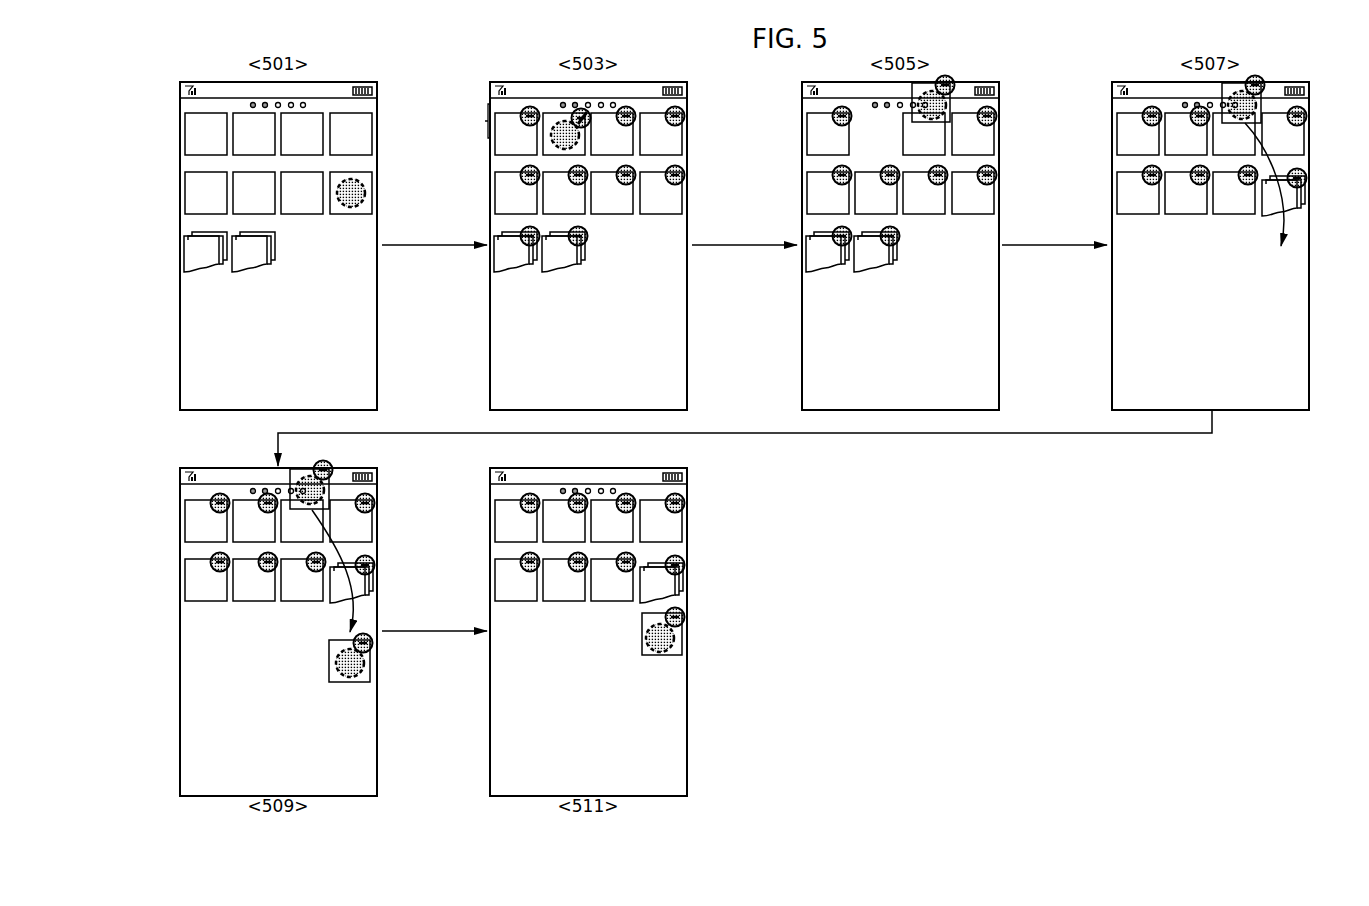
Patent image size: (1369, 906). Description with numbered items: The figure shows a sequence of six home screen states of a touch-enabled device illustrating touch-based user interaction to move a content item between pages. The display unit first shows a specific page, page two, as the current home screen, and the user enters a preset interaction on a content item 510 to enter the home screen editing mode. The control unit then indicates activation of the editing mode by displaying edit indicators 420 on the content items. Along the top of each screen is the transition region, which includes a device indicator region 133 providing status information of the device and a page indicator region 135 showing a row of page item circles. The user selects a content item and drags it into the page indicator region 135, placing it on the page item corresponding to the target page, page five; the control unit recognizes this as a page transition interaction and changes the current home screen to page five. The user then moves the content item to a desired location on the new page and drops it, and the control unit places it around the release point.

The content item 510 is at (365, 193).
The page indicator region 135 is at (478, 121).
The device indicator region 133 is at (999, 90).
The edit indicators 420 is at (631, 108).